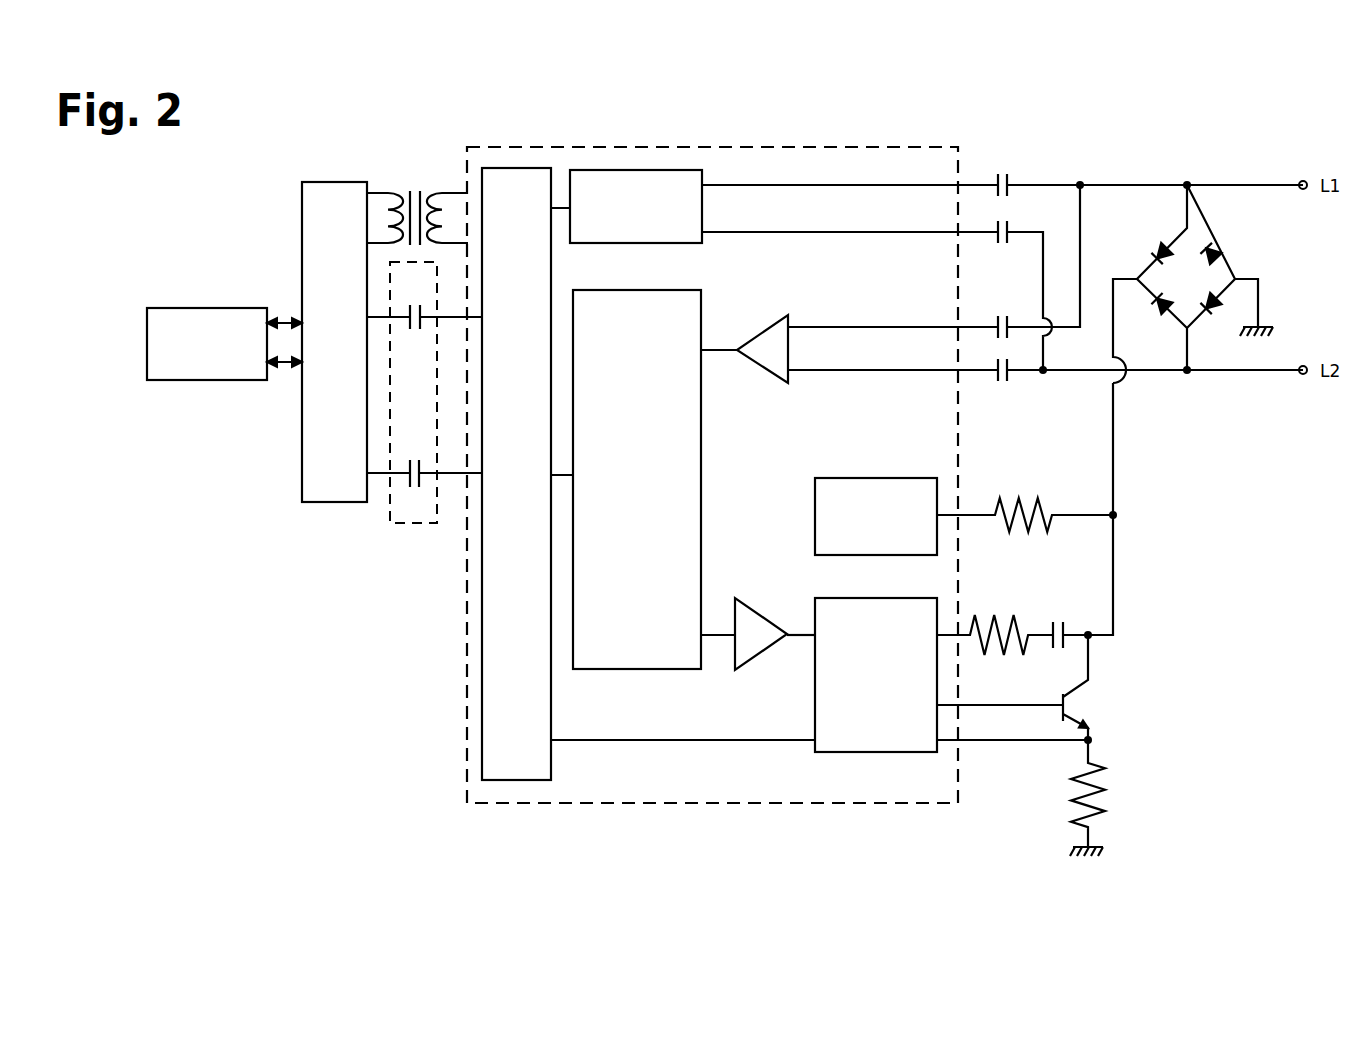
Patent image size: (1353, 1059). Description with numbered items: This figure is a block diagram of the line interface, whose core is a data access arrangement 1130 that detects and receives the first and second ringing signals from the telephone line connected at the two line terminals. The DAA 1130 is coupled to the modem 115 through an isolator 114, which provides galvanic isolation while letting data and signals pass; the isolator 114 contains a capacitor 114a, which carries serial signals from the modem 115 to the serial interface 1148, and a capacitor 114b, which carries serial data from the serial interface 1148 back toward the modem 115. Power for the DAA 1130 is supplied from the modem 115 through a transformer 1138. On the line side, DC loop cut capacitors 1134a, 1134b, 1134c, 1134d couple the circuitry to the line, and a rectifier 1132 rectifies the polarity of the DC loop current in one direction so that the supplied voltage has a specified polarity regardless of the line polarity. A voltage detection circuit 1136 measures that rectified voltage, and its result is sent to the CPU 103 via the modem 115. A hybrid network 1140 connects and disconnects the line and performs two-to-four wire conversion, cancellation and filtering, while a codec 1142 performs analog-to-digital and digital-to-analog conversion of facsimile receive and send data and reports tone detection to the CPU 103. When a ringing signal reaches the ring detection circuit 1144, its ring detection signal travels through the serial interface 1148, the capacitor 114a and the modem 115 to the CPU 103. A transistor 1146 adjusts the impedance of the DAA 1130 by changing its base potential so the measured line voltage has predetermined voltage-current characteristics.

The CPU 103 is at (212, 308).
The isolator 114 is at (348, 401).
The capacitor 114a is at (410, 308).
The capacitor 114b is at (410, 484).
The modem 115 is at (331, 182).
The data access arrangement 1130 is at (461, 686).
The rectifier 1132 is at (1212, 248).
The DC loop cut capacitor 1134a is at (1003, 172).
The DC loop cut capacitor 1134b is at (1003, 219).
The DC loop cut capacitor 1134c is at (1003, 317).
The DC loop cut capacitor 1134d is at (1007, 384).
The voltage detection circuit 1136 is at (862, 478).
The transformer 1138 is at (418, 194).
The hybrid network 1140 is at (868, 755).
The codec 1142 is at (640, 672).
The ring detection circuit 1144 is at (648, 169).
The transistor 1146 is at (1082, 705).
The serial interface 1148 is at (517, 781).